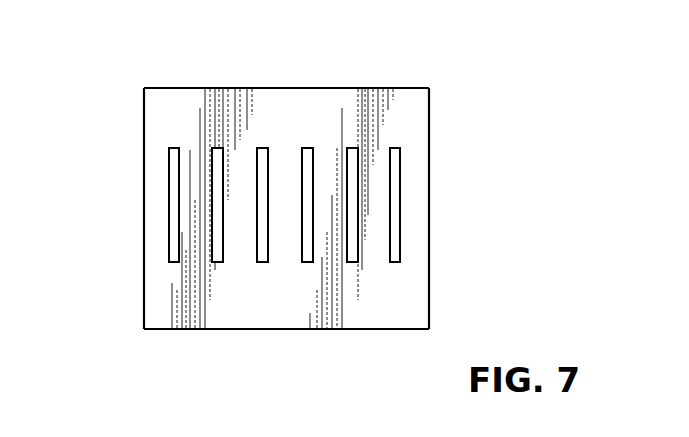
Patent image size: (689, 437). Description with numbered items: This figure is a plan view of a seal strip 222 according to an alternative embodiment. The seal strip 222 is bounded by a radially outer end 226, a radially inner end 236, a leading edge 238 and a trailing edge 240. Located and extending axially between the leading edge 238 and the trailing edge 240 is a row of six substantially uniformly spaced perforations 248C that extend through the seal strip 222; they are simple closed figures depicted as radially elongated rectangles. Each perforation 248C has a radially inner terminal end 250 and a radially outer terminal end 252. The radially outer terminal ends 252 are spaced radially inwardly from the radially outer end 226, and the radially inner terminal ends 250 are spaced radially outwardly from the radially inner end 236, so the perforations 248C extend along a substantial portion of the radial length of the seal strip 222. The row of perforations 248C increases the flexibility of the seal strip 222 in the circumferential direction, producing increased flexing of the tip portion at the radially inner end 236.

The seal strip 222 is at (430, 107).
The radially outer end 226 is at (195, 88).
The radially inner end 236 is at (215, 330).
The leading edge 238 is at (144, 250).
The trailing edge 240 is at (430, 308).
The radially inner terminal end 250 is at (177, 262).
The perforations 248C is at (214, 178).
The radially outer terminal end 252 is at (170, 148).